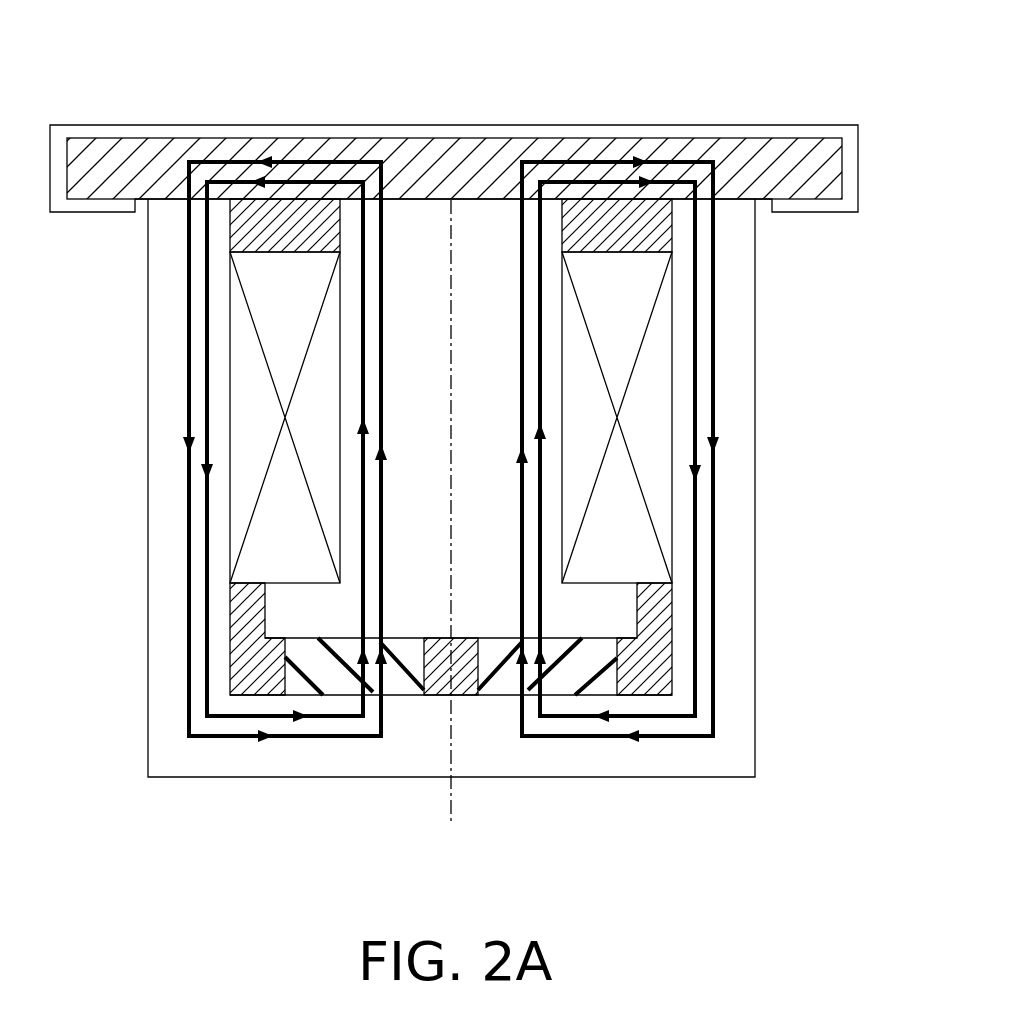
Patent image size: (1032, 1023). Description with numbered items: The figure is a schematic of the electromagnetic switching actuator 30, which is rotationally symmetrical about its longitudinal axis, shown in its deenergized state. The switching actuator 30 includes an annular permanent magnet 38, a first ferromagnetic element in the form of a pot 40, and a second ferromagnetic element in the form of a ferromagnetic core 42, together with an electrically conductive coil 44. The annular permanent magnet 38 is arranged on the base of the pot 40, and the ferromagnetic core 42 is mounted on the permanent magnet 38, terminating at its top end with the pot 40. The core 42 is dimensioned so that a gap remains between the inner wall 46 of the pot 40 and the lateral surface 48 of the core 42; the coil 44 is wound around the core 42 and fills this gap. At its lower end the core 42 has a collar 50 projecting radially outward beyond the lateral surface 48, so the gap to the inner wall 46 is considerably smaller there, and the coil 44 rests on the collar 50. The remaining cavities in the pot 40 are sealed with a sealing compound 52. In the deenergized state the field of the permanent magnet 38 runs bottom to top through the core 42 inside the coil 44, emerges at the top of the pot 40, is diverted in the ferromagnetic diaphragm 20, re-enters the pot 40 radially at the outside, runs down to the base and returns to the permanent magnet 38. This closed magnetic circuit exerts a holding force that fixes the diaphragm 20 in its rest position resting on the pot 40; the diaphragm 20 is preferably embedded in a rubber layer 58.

The ferromagnetic diaphragm 20 is at (420, 165).
The rubber layer 58 is at (733, 134).
The electromagnetic switching actuator 30 is at (822, 414).
The pot 40 is at (163, 698).
The coil 44 is at (665, 318).
The inner wall 46 is at (237, 393).
The lateral surface 48 is at (563, 498).
The sealing compound 52 is at (652, 635).
The collar 50 is at (317, 610).
The ferromagnetic core 42 is at (557, 614).
The annular permanent magnet 38 is at (602, 682).